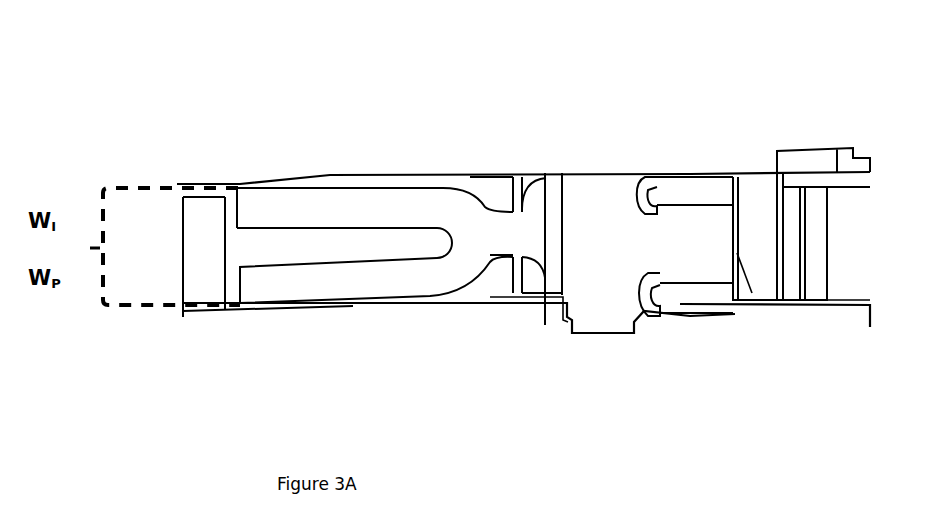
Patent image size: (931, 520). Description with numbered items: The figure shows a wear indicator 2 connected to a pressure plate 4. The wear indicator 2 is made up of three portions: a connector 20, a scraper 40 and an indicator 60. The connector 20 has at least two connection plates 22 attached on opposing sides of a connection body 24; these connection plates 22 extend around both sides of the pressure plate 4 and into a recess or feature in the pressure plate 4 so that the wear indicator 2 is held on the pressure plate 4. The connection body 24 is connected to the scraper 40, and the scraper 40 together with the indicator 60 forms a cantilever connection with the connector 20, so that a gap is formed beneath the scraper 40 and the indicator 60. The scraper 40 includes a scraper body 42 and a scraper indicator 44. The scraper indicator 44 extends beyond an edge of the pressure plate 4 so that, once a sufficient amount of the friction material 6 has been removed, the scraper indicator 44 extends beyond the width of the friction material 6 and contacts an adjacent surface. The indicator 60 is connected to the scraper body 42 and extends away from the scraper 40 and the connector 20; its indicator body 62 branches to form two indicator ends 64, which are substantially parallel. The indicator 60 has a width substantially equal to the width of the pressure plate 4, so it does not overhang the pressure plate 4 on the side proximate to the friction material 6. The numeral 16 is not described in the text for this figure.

The wear indicator 2 is at (779, 54).
The pressure plate 4 is at (763, 197).
The friction material 6 is at (783, 342).
The housing wall 16 is at (710, 173).
The connector 20 is at (732, 320).
The connection plates 22 is at (648, 175).
The connection body 24 is at (712, 235).
The scraper 40 is at (570, 330).
The scraper body 42 is at (596, 222).
The scraper indicator 44 is at (595, 317).
The indicator 60 is at (242, 184).
The indicator body 62 is at (490, 277).
The indicator ends 64 is at (318, 212).